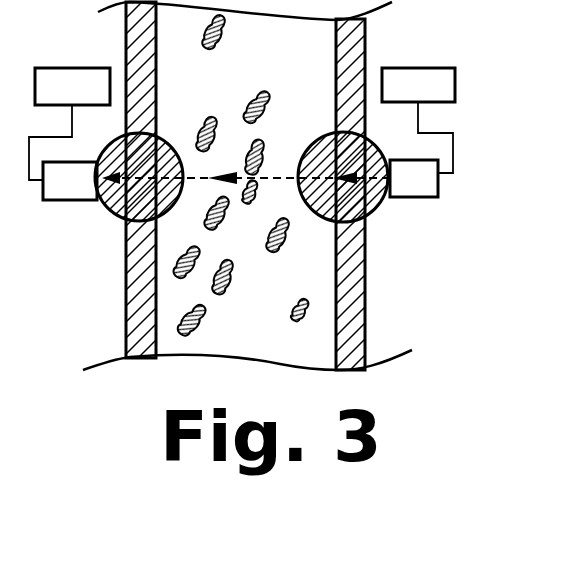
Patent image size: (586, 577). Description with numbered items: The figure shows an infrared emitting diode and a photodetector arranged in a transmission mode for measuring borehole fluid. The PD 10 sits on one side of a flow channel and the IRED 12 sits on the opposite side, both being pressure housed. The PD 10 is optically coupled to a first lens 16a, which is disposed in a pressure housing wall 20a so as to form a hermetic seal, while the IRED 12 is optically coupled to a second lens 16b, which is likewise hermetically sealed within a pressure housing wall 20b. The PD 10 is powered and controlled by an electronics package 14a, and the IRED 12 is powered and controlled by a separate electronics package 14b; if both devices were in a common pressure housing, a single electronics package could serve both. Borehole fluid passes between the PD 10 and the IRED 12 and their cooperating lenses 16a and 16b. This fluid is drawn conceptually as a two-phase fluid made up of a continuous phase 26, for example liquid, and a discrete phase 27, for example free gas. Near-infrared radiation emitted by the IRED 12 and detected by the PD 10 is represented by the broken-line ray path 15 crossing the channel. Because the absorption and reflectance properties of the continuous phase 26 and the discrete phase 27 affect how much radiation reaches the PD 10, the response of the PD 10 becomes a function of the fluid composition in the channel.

The PD 10 is at (72, 203).
The IRED 12 is at (420, 200).
The electronics package 14a is at (57, 68).
The electronics package 14b is at (408, 68).
The ray path 15 is at (268, 176).
The first lens 16a is at (163, 136).
The second lens 16b is at (323, 128).
The pressure housing wall 20a is at (125, 257).
The pressure housing wall 20b is at (366, 288).
The continuous phase 26 is at (270, 336).
The discrete phase 27 is at (222, 47).